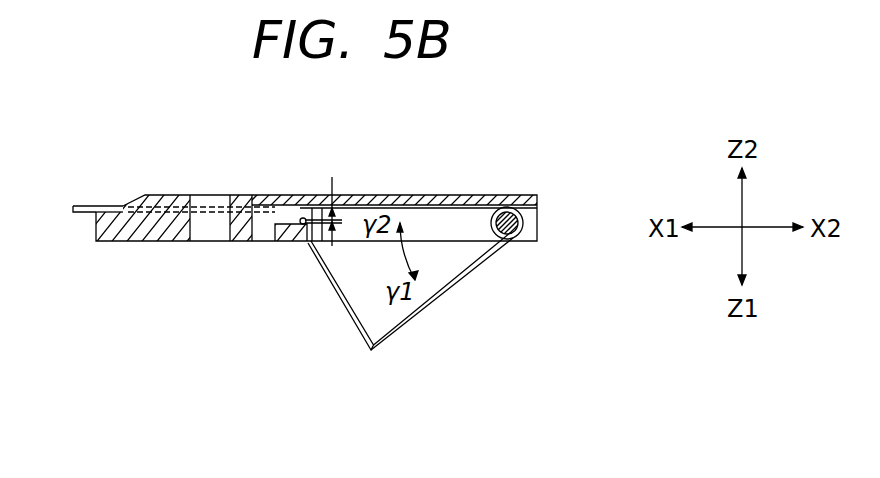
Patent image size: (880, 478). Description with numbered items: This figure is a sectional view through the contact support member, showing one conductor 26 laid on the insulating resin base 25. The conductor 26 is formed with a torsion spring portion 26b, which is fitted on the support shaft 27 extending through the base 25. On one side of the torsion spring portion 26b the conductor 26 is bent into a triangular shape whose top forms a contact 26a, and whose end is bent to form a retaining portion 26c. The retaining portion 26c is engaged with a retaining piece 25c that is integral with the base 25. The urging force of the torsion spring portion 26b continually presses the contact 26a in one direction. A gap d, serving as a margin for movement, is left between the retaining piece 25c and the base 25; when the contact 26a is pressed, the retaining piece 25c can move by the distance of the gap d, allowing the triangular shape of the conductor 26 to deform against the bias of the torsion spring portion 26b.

The base 25 is at (135, 243).
The retaining piece 25c is at (288, 243).
The conductor 26 is at (310, 277).
The contact 26a is at (371, 350).
The torsion spring portion 26b is at (450, 293).
The retaining portion 26c is at (307, 218).
The support shaft 27 is at (515, 207).
The gap d is at (337, 211).